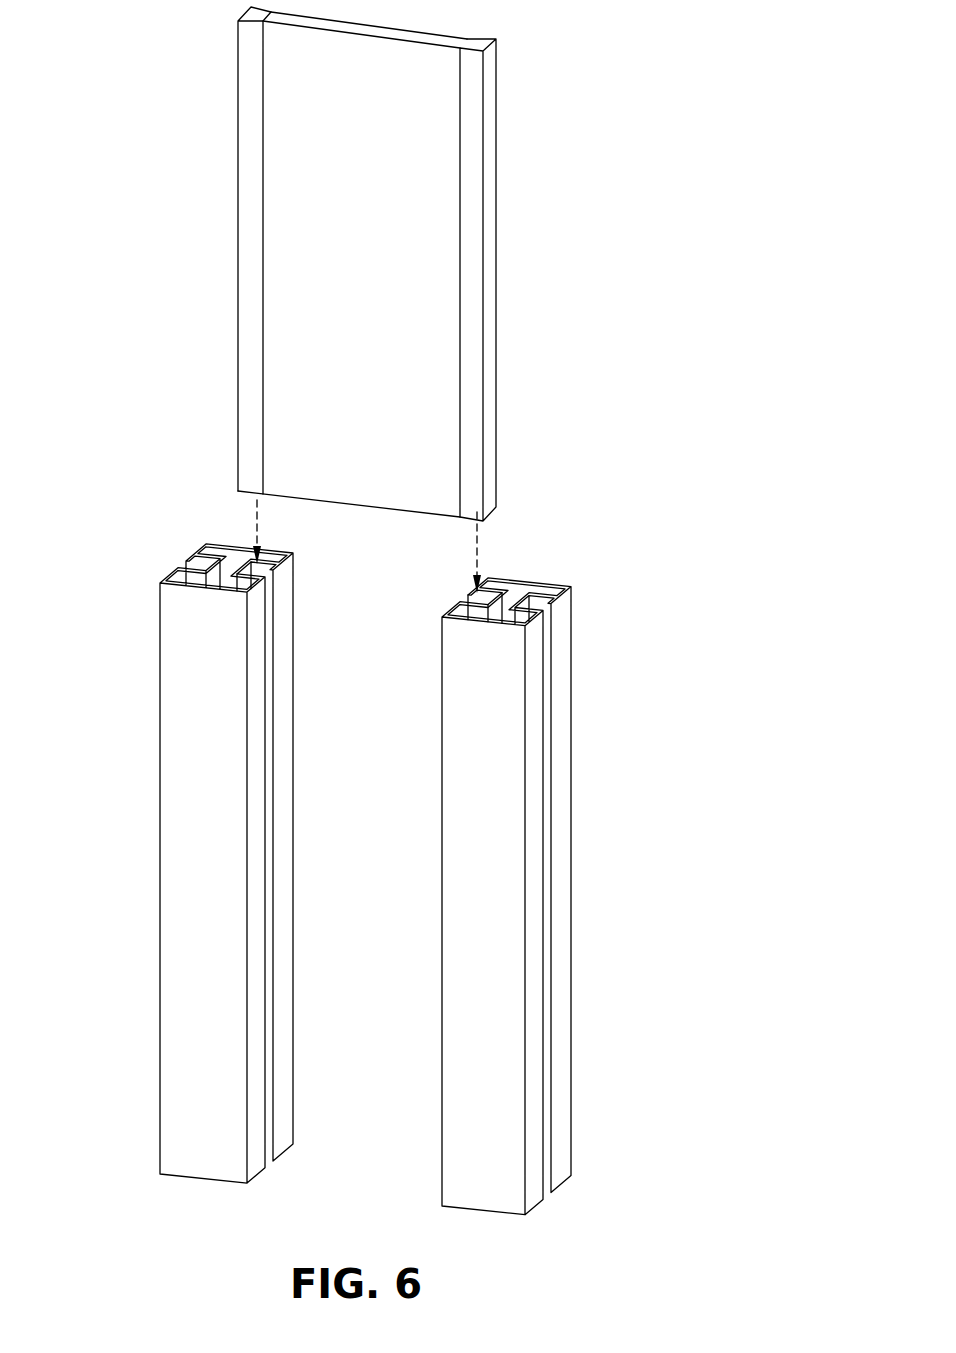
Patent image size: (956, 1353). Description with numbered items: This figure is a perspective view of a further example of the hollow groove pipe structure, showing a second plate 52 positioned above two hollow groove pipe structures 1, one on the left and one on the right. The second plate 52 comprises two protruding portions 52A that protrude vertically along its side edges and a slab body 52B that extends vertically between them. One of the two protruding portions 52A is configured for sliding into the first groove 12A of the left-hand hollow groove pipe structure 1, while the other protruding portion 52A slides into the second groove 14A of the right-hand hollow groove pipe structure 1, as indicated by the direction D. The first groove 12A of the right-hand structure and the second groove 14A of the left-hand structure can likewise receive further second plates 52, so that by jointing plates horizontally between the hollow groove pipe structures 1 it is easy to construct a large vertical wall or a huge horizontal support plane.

The second plate 52 is at (367, 264).
The protruding portion 52A is at (251, 316).
The slab body 52B is at (372, 190).
The hollow groove pipe structure 1 is at (369, 868).
The first groove 12A is at (257, 584).
The second groove 14A is at (485, 582).
The direction D is at (377, 546).